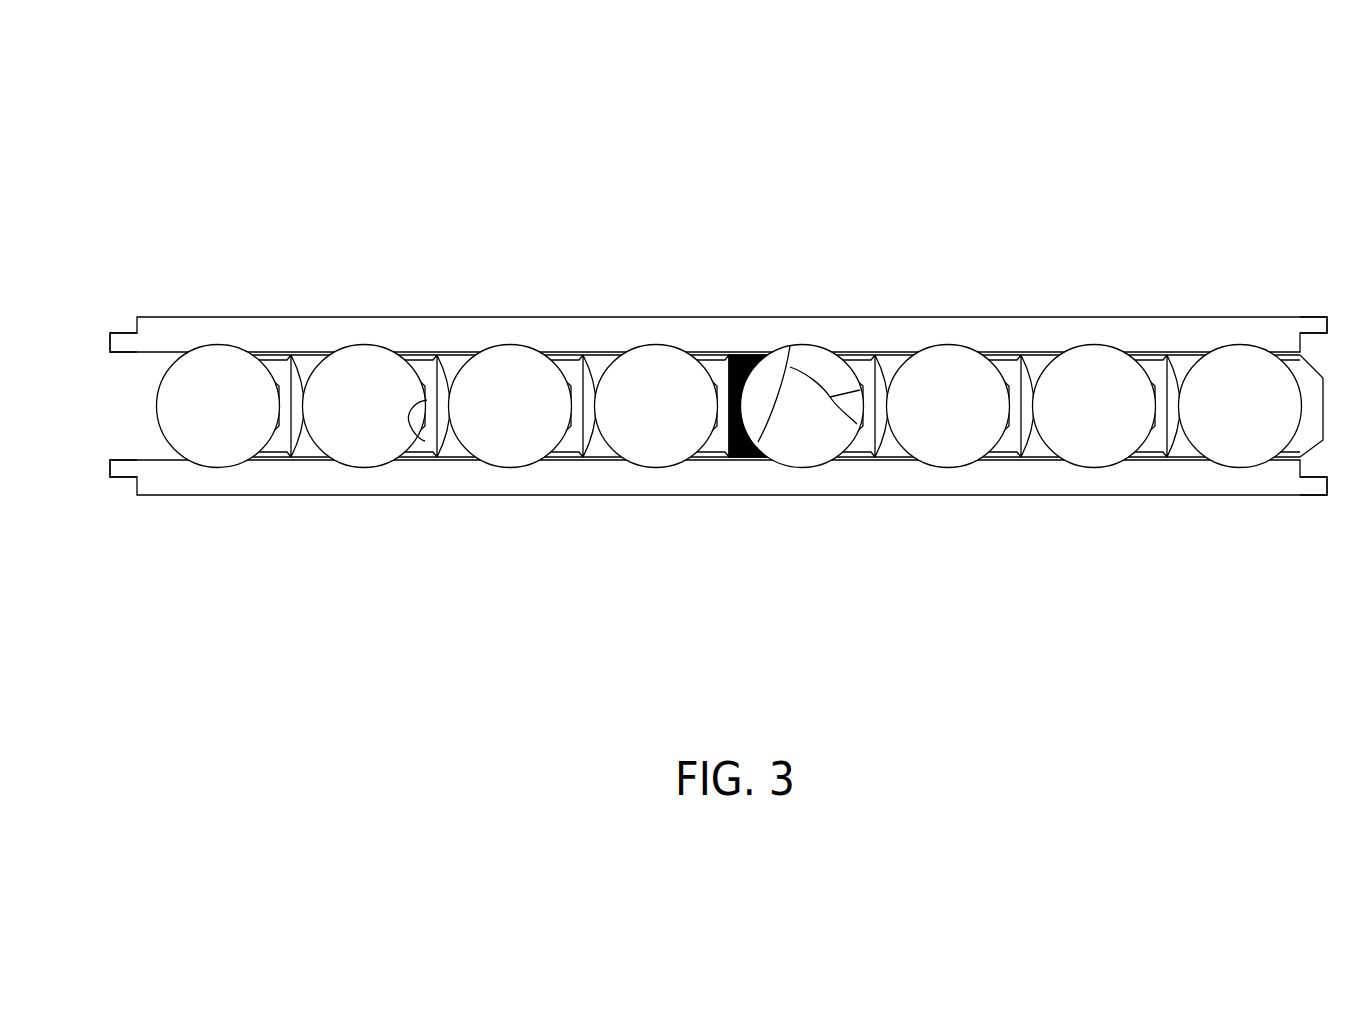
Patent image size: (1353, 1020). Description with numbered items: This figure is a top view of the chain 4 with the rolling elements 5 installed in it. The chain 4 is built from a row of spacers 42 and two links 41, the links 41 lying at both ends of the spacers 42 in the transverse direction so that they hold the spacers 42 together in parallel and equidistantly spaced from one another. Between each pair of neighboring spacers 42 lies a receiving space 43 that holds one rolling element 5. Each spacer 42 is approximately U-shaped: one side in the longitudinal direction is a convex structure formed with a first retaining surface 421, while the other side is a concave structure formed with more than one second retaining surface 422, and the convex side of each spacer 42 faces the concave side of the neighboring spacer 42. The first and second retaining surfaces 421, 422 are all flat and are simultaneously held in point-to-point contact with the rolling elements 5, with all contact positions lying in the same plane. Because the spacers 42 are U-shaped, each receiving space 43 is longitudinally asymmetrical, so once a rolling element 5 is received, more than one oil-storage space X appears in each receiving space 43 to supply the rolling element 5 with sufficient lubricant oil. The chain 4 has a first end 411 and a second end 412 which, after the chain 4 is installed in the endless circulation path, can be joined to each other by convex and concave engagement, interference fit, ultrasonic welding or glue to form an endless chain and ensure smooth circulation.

The chain 4 is at (234, 75).
The link 41 is at (290, 317).
The first end 411 is at (121, 333).
The second end 412 is at (1322, 317).
The spacer 42 is at (770, 406).
The first retaining surface 421 is at (450, 404).
The second retaining surface 422 is at (407, 408).
The receiving space 43 is at (950, 345).
The rolling element 5 is at (1077, 442).
The oil-storage space X is at (790, 346).